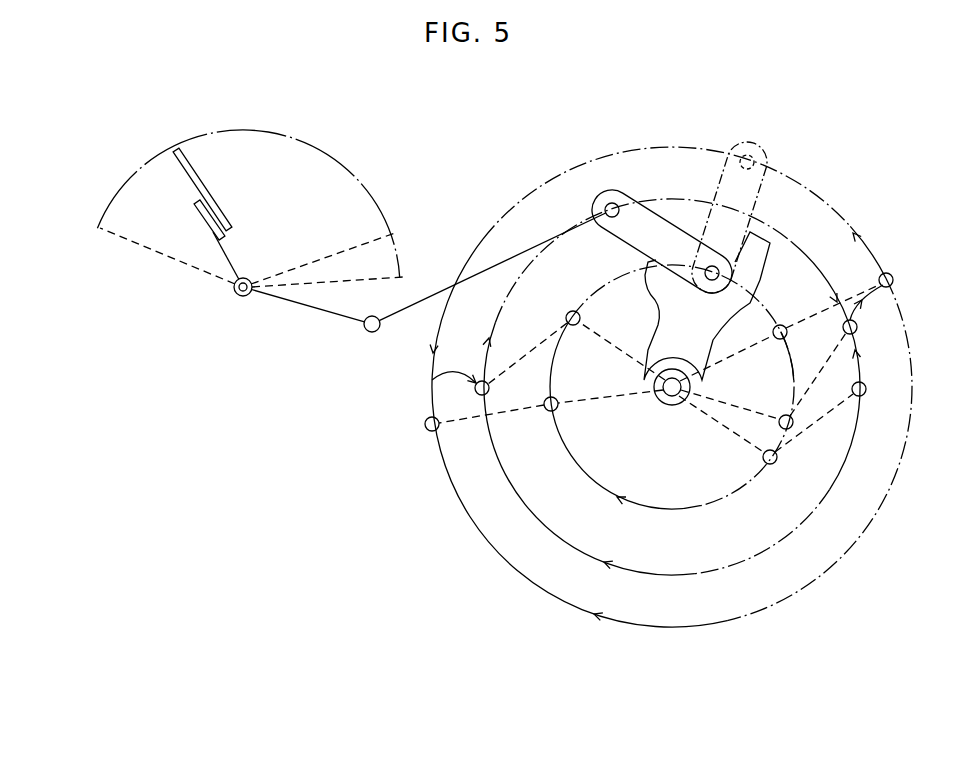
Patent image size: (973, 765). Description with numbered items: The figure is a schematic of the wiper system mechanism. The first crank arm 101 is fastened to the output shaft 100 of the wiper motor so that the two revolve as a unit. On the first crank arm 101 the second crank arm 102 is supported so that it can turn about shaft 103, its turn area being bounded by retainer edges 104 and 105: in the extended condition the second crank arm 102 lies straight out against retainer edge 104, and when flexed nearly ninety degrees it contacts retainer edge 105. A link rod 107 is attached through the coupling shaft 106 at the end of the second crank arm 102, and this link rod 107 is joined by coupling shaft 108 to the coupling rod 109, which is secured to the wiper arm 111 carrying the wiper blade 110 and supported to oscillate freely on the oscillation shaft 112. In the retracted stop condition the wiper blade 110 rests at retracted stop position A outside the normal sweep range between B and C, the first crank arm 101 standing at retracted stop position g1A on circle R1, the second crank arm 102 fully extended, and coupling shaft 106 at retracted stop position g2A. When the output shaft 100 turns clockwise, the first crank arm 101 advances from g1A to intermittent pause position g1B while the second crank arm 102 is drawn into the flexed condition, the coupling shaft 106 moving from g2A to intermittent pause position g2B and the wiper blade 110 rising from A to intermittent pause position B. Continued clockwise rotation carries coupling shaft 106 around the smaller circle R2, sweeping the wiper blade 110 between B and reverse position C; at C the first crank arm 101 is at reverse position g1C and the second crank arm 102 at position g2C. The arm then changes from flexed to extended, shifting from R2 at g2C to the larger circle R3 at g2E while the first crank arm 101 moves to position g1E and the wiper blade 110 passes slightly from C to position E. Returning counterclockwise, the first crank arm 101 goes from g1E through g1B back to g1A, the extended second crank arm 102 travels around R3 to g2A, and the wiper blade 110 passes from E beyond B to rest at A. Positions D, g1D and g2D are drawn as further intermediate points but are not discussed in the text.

The output shaft 100 is at (671, 397).
The first crank arm 101 is at (682, 323).
The second crank arm 102 is at (647, 213).
The shaft 103 is at (703, 230).
The retainer edge 104 is at (745, 232).
The retainer edge 105 is at (628, 283).
The coupling shaft 106 is at (612, 203).
The link rod 107 is at (482, 268).
The coupling shaft 108 is at (372, 332).
The coupling rod 109 is at (312, 312).
The wiper blade 110 is at (204, 182).
The wiper arm 111 is at (217, 245).
The oscillation shaft 112 is at (238, 296).
The retracted stop position g1A is at (550, 412).
The intermittent pause position g1B is at (569, 312).
The reverse position g1C is at (770, 465).
The gear position g1D is at (782, 416).
The position g1E is at (782, 325).
The retracted stop position g2A is at (428, 430).
The intermittent pause position g2B is at (482, 396).
The position g2C is at (866, 394).
The gear position g2D is at (858, 325).
The position g2E is at (893, 280).
The circumference R1 is at (665, 509).
The circumference R2 is at (664, 576).
The circumference R3 is at (660, 628).
The retracted stop position A is at (398, 270).
The intermittent pause position B is at (387, 230).
The reverse position C is at (107, 222).
The lever position D is at (118, 193).
The position E is at (138, 179).